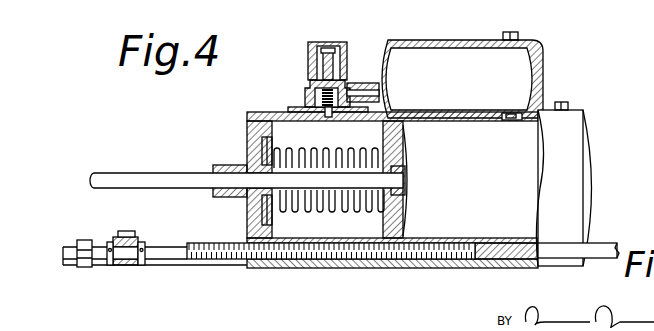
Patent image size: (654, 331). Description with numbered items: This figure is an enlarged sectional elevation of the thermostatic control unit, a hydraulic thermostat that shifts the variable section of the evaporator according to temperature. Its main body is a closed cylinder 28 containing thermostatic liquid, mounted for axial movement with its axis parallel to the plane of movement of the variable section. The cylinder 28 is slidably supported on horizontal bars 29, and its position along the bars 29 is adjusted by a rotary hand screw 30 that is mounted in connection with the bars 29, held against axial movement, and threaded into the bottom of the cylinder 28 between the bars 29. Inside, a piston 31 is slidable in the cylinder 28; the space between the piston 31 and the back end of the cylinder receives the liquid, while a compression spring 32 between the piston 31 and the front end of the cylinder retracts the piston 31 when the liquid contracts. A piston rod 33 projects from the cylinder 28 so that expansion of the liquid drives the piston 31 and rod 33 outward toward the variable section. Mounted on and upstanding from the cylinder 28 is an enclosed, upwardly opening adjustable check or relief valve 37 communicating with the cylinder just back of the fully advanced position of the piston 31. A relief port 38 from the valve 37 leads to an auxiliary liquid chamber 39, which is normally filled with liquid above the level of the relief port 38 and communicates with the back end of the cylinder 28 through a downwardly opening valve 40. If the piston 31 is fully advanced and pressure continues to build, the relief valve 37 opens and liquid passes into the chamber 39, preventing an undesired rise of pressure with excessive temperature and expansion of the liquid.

The closed cylinder 28 is at (563, 155).
The horizontal bars 29 is at (222, 260).
The rotary hand screw 30 is at (195, 258).
The piston 31 is at (393, 213).
The compression spring 32 is at (258, 208).
The piston rod 33 is at (150, 178).
The adjustable check or relief valve 37 is at (310, 100).
The relief port 38 is at (363, 90).
The auxiliary liquid chamber 39 is at (448, 57).
The downwardly opening valve 40 is at (507, 121).